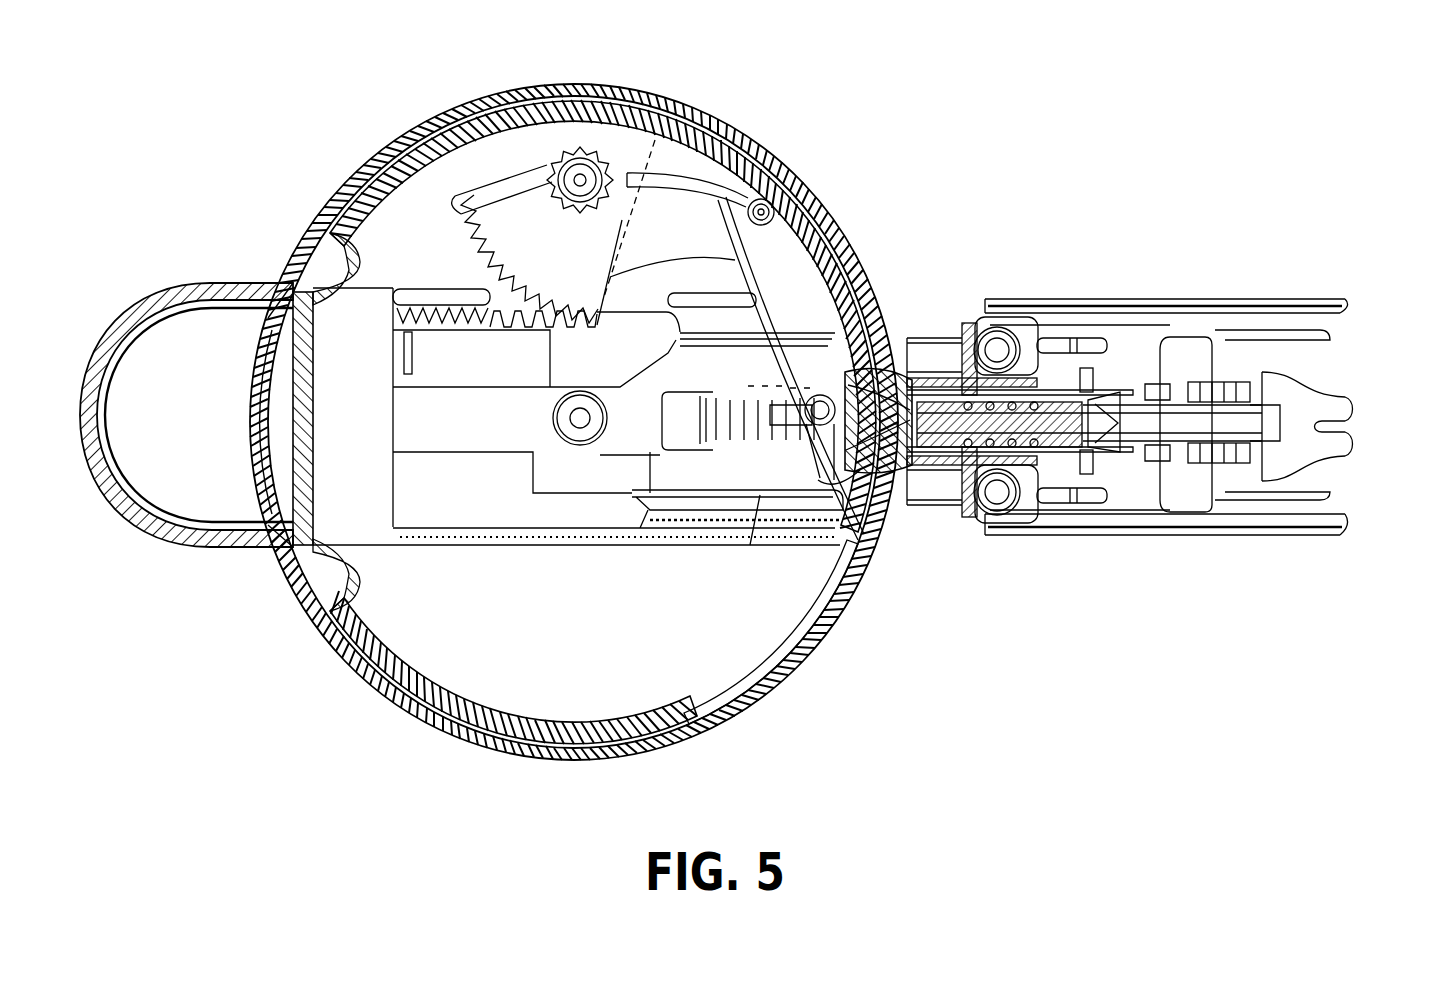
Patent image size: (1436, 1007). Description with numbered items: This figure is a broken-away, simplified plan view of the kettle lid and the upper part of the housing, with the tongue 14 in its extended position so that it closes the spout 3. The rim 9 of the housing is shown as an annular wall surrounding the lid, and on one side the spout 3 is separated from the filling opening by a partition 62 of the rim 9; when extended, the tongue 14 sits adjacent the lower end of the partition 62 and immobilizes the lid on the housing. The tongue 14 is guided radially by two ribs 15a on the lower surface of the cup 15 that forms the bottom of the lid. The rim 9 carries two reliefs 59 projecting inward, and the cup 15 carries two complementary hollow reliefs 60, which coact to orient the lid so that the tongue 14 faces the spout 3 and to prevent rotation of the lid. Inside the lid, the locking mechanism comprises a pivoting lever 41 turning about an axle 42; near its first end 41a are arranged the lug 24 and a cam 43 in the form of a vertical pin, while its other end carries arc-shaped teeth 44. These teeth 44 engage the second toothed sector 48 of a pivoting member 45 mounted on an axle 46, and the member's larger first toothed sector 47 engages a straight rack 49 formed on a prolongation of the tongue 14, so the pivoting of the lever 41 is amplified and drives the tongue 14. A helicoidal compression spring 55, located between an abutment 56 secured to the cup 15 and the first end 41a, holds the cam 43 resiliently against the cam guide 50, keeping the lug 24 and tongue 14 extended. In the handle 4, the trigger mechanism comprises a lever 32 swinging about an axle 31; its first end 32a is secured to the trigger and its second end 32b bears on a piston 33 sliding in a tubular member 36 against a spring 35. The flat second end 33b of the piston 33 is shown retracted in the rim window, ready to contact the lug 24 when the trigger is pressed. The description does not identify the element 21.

The spout 3 is at (138, 305).
The handle 4 is at (1210, 530).
The rim 9 is at (565, 752).
The tongue 14 is at (202, 345).
The cup 15 is at (588, 745).
The ribs 15a is at (403, 326).
The pin 21 is at (588, 432).
The lug 24 is at (882, 462).
The axle 31 is at (1195, 355).
The lever 32 is at (1240, 410).
The first end 32a is at (1278, 427).
The second end 32b is at (1105, 398).
The piston 33 is at (1045, 470).
The second end 33b is at (962, 500).
The spring 35 is at (980, 345).
The tubular member 36 is at (1032, 345).
The pivoting lever 41 is at (800, 275).
The first end 41a is at (797, 520).
The axle 42 is at (772, 205).
The cam 43 is at (812, 424).
The teeth 44 is at (657, 135).
The pivoting member 45 is at (505, 178).
The axle 46 is at (577, 160).
The first toothed sector 47 is at (472, 266).
The second toothed sector 48 is at (600, 158).
The straight rack 49 is at (520, 333).
The cam guide 50 is at (728, 518).
The helicoidal compression spring 55 is at (748, 396).
The abutment 56 is at (604, 418).
The reliefs 59 is at (308, 238).
The hollow reliefs 60 is at (362, 255).
The partition 62 is at (258, 405).